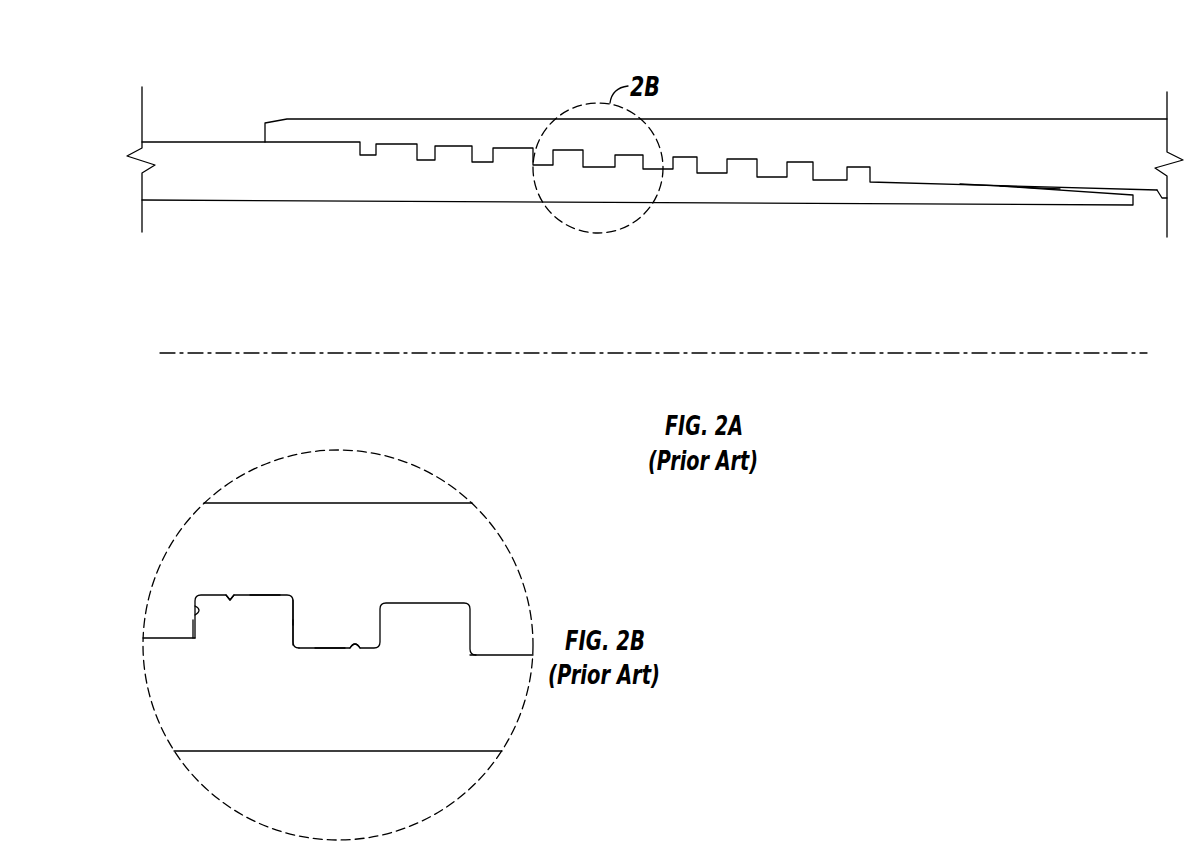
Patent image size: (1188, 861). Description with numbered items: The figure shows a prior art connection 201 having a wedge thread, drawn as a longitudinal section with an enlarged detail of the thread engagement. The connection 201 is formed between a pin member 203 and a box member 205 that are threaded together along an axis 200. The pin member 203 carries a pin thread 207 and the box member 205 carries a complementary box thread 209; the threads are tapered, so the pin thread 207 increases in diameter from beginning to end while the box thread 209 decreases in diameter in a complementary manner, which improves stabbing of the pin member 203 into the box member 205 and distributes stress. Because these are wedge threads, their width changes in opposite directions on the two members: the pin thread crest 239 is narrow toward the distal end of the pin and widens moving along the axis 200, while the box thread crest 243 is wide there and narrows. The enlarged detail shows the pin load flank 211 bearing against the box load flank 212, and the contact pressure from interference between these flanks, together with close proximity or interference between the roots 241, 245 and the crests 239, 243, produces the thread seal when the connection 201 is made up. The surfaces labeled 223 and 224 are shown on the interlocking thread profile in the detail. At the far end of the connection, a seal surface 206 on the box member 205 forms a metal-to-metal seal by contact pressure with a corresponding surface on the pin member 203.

In FIG. 2A, the axis 200 is at (1035, 353).
In FIG. 2A, the connection 201 is at (223, 180).
In FIG. 2B, the pin member 203 is at (237, 737).
In FIG. 2A, the box member 205 is at (1152, 155).
In FIG. 2B, the box member 205 is at (462, 546).
In FIG. 2A, the seal surface 206 is at (1010, 187).
In FIG. 2B, the pin thread 207 is at (258, 640).
In FIG. 2B, the box thread 209 is at (362, 635).
In FIG. 2B, the pin load flank 211 is at (193, 607).
In FIG. 2B, the box load flank 212 is at (192, 628).
In FIG. 2B, the side surface of recess 223 is at (293, 623).
In FIG. 2B, the side wall 224 is at (297, 613).
In FIG. 2B, the pin thread crest 239 is at (230, 597).
In FIG. 2B, the root 241 is at (330, 648).
In FIG. 2B, the box thread crest 243 is at (357, 647).
In FIG. 2B, the root 245 is at (265, 595).